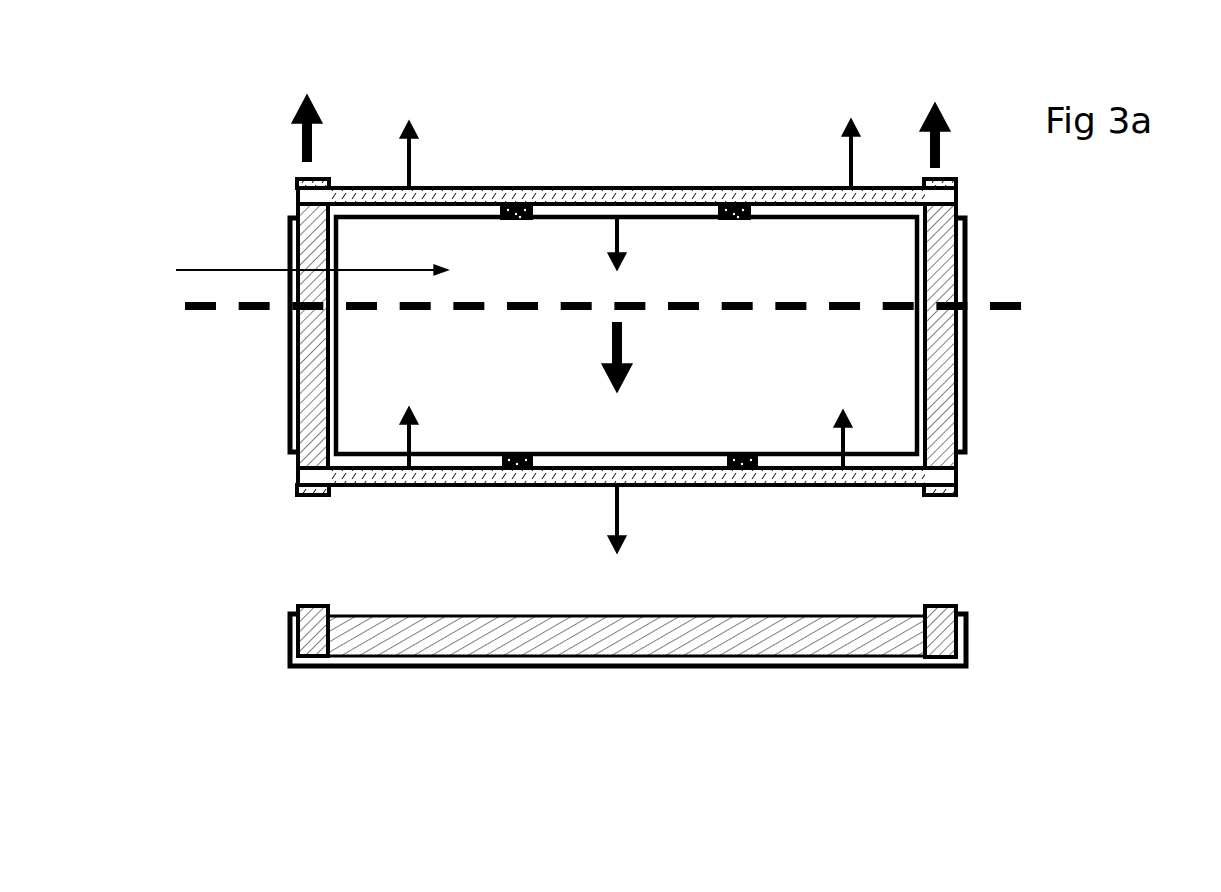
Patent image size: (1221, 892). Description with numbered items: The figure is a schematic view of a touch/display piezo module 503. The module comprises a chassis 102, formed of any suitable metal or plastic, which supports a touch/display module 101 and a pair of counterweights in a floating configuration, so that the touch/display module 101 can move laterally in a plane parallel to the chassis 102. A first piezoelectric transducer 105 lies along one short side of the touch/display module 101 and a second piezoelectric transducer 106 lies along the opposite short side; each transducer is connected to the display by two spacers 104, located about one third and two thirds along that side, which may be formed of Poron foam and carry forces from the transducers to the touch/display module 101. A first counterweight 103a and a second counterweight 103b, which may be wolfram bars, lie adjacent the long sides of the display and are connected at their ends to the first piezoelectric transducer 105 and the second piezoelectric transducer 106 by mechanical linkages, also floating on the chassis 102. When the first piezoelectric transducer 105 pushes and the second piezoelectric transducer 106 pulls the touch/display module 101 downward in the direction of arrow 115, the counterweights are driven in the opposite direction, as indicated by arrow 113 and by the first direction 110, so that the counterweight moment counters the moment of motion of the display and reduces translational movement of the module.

The touch/display module 101 is at (272, 264).
The chassis 102 is at (283, 452).
The first counterweight 103a is at (310, 404).
The second counterweight 103b is at (953, 449).
The spacers 104 is at (529, 193).
The first piezoelectric transducer 105 is at (721, 180).
The second piezoelectric transducer 106 is at (395, 496).
The first direction 110 is at (274, 128).
The arrow 113 is at (973, 135).
The arrow 115 is at (645, 362).
The touch/display piezo module 503 is at (1018, 411).